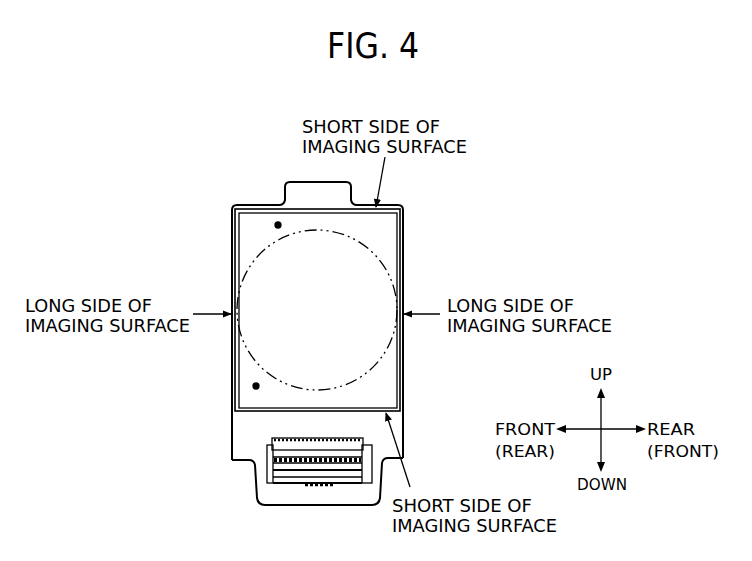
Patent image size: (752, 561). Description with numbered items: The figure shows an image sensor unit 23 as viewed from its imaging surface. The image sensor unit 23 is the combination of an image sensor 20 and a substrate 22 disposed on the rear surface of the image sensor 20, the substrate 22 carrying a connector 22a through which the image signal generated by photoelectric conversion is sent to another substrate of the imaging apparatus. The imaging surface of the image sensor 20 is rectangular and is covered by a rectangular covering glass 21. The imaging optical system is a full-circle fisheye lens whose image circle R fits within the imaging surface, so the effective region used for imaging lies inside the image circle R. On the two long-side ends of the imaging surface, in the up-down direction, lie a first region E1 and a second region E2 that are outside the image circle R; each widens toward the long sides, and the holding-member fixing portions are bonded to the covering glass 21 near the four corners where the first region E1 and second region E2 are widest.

The image sensor 20 is at (330, 337).
The covering glass 21 is at (400, 255).
The substrate 22 is at (276, 472).
The connector 22a is at (287, 468).
The image sensor unit 23 is at (414, 204).
The image circle R is at (270, 240).
The first region E1 is at (278, 225).
The second region E2 is at (256, 386).